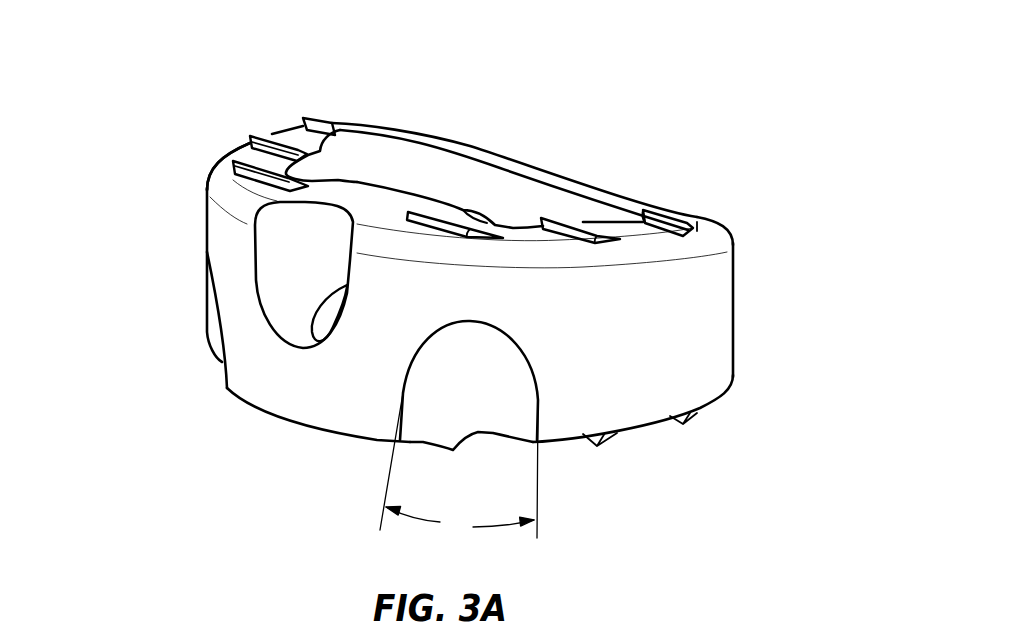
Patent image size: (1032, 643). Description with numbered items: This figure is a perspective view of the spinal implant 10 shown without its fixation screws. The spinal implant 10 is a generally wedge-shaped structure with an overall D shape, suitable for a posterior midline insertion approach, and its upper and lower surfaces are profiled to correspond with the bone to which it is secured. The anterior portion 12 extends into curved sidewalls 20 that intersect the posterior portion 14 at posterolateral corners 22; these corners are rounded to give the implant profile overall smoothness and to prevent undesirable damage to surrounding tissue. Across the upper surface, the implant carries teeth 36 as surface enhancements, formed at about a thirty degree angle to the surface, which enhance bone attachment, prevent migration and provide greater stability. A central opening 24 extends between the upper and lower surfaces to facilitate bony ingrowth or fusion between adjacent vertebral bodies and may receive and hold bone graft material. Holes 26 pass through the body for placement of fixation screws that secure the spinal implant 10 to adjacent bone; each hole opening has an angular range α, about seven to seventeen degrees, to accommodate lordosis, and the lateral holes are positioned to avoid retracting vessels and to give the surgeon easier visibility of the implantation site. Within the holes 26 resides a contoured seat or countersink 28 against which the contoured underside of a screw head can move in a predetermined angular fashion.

The spinal implant 10 is at (187, 122).
The anterior portion 12 is at (255, 338).
The posterior portion 14 is at (638, 197).
The curved sidewalls 20 is at (688, 350).
The posterolateral corners 22 is at (733, 307).
The central opening 24 is at (450, 191).
The holes 26 is at (510, 390).
The countersink 28 is at (293, 307).
The teeth 36 is at (275, 140).